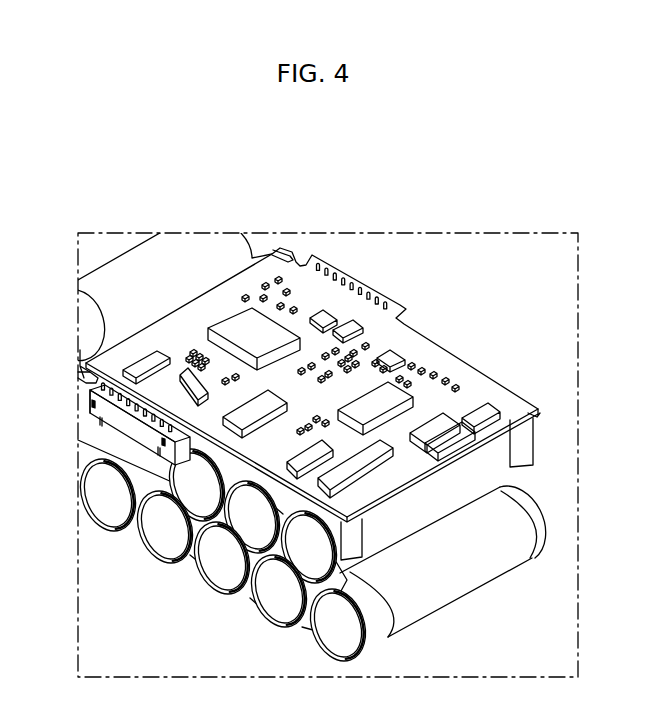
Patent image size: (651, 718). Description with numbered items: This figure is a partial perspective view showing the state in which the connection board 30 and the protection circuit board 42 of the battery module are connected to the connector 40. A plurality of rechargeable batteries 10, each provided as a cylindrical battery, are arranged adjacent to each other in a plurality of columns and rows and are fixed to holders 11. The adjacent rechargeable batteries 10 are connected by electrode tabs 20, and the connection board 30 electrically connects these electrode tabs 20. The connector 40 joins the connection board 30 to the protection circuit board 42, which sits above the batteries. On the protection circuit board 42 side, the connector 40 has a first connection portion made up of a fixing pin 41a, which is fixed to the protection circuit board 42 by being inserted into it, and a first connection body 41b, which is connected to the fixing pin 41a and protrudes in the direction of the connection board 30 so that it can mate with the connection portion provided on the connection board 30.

The rechargeable battery 10 is at (112, 242).
The holder 11 is at (260, 240).
The electrode tab 20 is at (133, 524).
The connection board 30 is at (155, 465).
The connector 40 is at (112, 444).
The fixing pin 41a is at (96, 381).
The first connection body 41b is at (90, 418).
The protection circuit board 42 is at (417, 345).